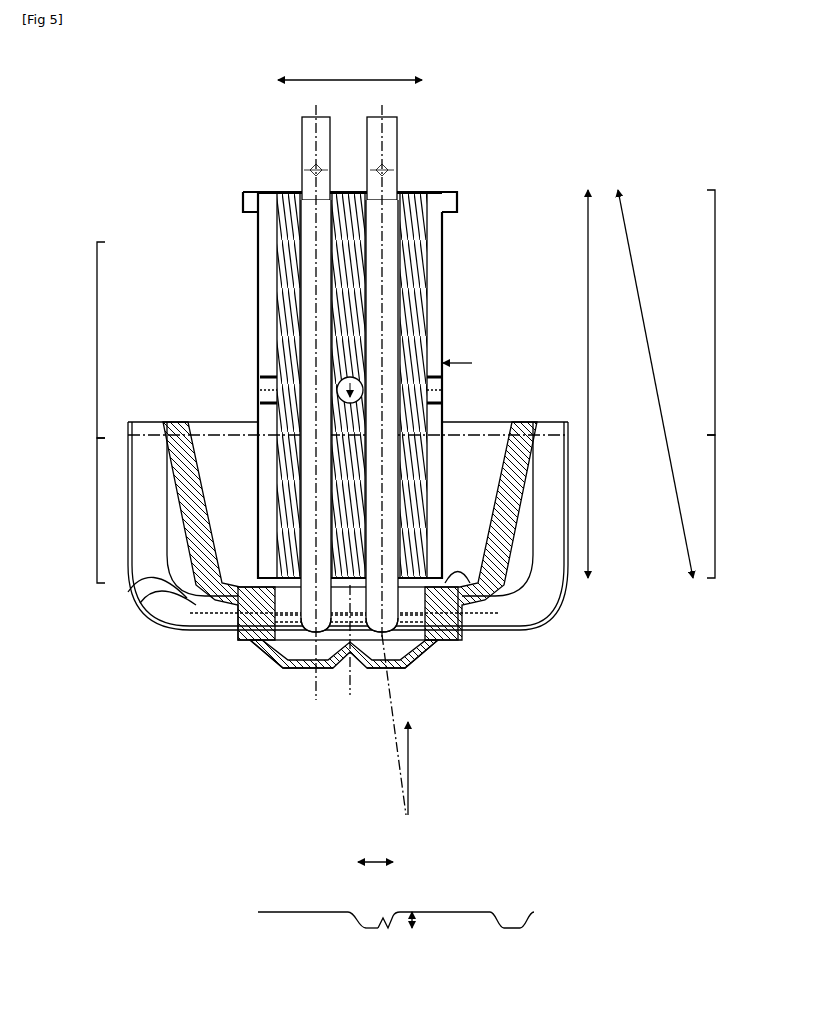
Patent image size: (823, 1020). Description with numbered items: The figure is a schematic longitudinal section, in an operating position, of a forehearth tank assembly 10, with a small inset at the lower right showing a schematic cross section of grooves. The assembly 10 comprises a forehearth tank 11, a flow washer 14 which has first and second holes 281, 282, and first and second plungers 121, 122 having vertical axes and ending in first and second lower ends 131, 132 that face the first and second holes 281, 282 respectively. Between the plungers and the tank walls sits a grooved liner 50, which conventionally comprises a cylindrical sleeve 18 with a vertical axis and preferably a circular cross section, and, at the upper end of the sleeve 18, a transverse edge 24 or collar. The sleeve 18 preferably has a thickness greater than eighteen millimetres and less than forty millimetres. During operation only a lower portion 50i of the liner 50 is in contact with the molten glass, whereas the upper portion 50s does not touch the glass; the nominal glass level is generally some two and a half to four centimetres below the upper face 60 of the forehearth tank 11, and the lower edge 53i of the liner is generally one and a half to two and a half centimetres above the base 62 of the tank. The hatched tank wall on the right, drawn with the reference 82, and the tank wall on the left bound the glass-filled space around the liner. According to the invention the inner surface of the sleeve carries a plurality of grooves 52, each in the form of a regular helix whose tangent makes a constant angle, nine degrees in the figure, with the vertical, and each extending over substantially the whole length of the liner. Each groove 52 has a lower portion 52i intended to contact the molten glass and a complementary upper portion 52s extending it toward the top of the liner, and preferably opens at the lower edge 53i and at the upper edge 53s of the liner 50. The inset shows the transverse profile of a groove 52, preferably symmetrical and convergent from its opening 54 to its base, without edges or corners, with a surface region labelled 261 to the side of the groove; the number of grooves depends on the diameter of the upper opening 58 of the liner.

The forehearth tank assembly 10 is at (208, 288).
The forehearth tank 11 is at (137, 578).
The first plunger 121 is at (305, 140).
The second plunger 122 is at (388, 140).
The first lower end 131 is at (278, 645).
The second lower end 132 is at (425, 655).
The flow washer 14 is at (430, 648).
The cylindrical sleeve 18 is at (443, 418).
The transverse edge 24 is at (457, 197).
The coil wire 261 is at (275, 320).
The first hole 281 is at (305, 668).
The second hole 282 is at (400, 685).
The grooved liner 50 is at (443, 243).
The groove 52 is at (375, 902).
The opening 54 is at (383, 913).
The upper opening 58 is at (412, 186).
The upper face 60 is at (178, 422).
The base 62 is at (425, 320).
The cup wall right 82 is at (490, 600).
The upper edge 53s is at (262, 192).
The lower edge 53i is at (196, 600).
The upper portion 50s is at (96, 342).
The lower portion 50i is at (97, 511).
The upper portion 52s is at (716, 318).
The lower portion 52i is at (716, 510).